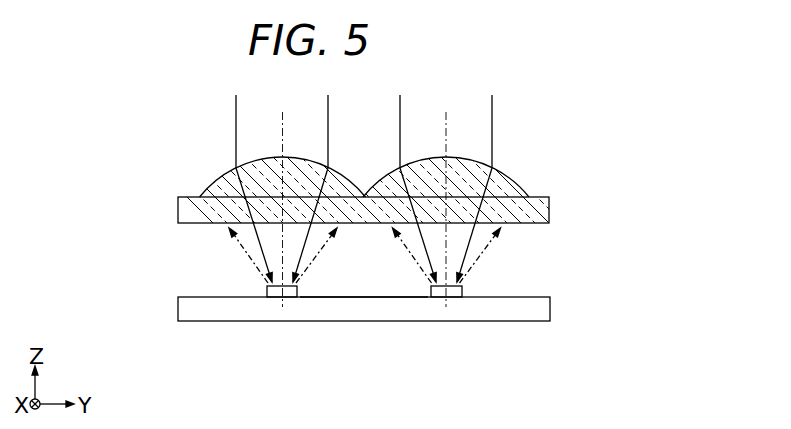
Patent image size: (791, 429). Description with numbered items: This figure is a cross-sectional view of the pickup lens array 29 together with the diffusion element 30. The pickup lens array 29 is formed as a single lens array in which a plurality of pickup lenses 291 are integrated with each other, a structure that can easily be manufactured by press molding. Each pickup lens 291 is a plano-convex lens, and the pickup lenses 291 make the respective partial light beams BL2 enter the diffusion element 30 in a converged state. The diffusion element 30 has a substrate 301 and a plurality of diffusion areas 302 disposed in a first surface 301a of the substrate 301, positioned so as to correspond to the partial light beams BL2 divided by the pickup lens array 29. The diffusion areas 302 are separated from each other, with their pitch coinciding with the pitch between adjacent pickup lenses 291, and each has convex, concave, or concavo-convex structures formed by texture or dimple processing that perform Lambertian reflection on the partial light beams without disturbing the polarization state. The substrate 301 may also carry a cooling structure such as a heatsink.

The pickup lens array 29 is at (349, 163).
The pickup lens 291 is at (213, 183).
The partial light beam BL2 is at (494, 113).
The diffusion element 30 is at (337, 316).
The substrate 301 is at (390, 320).
The first surface 301a is at (532, 297).
The diffusion area 302 is at (272, 297).